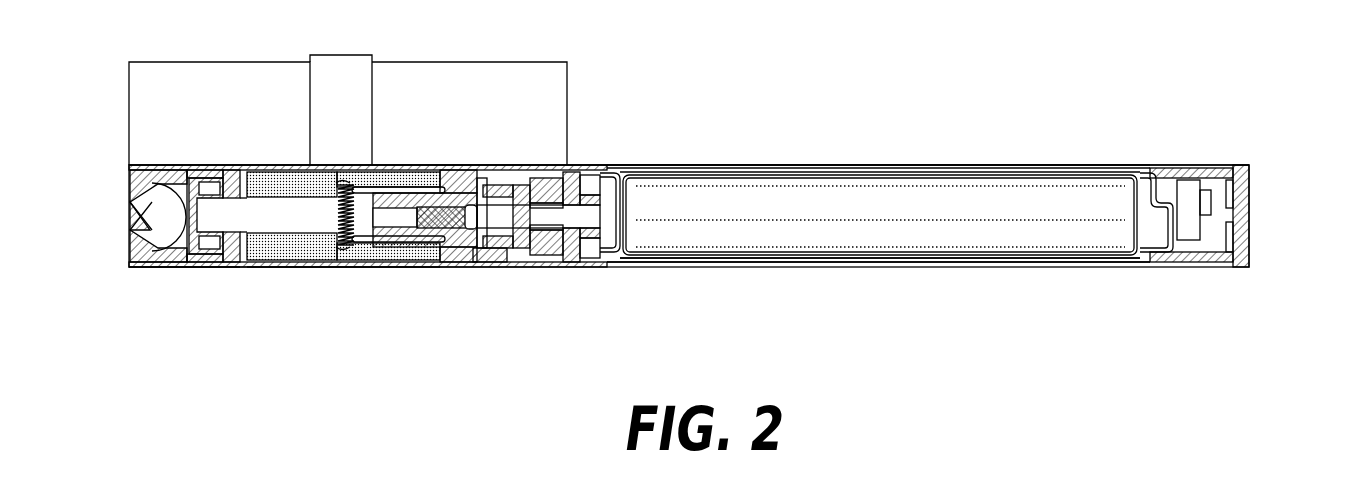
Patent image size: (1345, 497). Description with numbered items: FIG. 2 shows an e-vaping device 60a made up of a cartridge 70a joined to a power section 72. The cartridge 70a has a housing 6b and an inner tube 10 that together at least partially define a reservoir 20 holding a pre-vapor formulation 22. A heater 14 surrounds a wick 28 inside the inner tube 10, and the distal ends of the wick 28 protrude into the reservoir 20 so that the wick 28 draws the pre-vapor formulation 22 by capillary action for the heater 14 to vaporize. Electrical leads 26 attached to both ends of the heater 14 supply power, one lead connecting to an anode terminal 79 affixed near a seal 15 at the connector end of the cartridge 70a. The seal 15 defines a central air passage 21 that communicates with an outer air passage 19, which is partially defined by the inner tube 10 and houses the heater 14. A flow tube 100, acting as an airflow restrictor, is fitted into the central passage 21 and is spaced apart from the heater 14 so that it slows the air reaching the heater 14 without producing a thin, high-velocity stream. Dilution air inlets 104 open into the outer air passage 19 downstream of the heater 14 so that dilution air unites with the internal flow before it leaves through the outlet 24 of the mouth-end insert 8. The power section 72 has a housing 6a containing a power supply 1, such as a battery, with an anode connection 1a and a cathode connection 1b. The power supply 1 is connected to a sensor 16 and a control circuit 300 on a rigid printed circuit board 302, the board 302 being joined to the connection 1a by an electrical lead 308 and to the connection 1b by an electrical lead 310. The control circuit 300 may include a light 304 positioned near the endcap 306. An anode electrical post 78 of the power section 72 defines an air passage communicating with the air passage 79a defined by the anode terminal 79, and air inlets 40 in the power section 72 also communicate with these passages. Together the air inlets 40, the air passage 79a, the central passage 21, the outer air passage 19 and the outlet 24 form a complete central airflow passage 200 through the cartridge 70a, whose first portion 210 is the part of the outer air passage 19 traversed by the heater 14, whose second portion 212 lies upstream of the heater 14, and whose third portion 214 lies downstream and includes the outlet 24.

The power supply 1 is at (866, 165).
The anode connection 1a is at (607, 268).
The cathode connection 1b is at (1153, 242).
The housing 6a is at (948, 165).
The housing 6b is at (207, 178).
The mouth-end insert 8 is at (147, 168).
The inner tube 10 is at (246, 263).
The heater 14 is at (327, 217).
The seal 15 is at (452, 205).
The sensor 16 is at (1190, 185).
The outer air passage 19 is at (298, 235).
The reservoir 20 is at (262, 175).
The central air passage 21 is at (392, 235).
The pre-vapor formulation 22 is at (303, 180).
The outlet 24 is at (140, 238).
The electrical leads 26 is at (408, 186).
The wick 28 is at (345, 180).
The air inlets 40 is at (562, 268).
The e-vaping device 60a is at (626, 113).
The cartridge 70a is at (332, 281).
The power section 72 is at (800, 157).
The anode electrical post 78 is at (548, 178).
The anode terminal 79 is at (518, 185).
The air passage 79a is at (472, 258).
The flow tube 100 is at (473, 193).
The dilution air inlets 104 is at (221, 182).
The central airflow passage 200 is at (196, 279).
The first portion 210 is at (345, 55).
The second portion 212 is at (481, 62).
The third portion 214 is at (226, 62).
The control circuit 300 is at (1165, 170).
The rigid printed circuit board 302 is at (1207, 199).
The light 304 is at (1235, 214).
The endcap 306 is at (1250, 168).
The electrical lead 308 is at (618, 165).
The electrical lead 310 is at (667, 268).